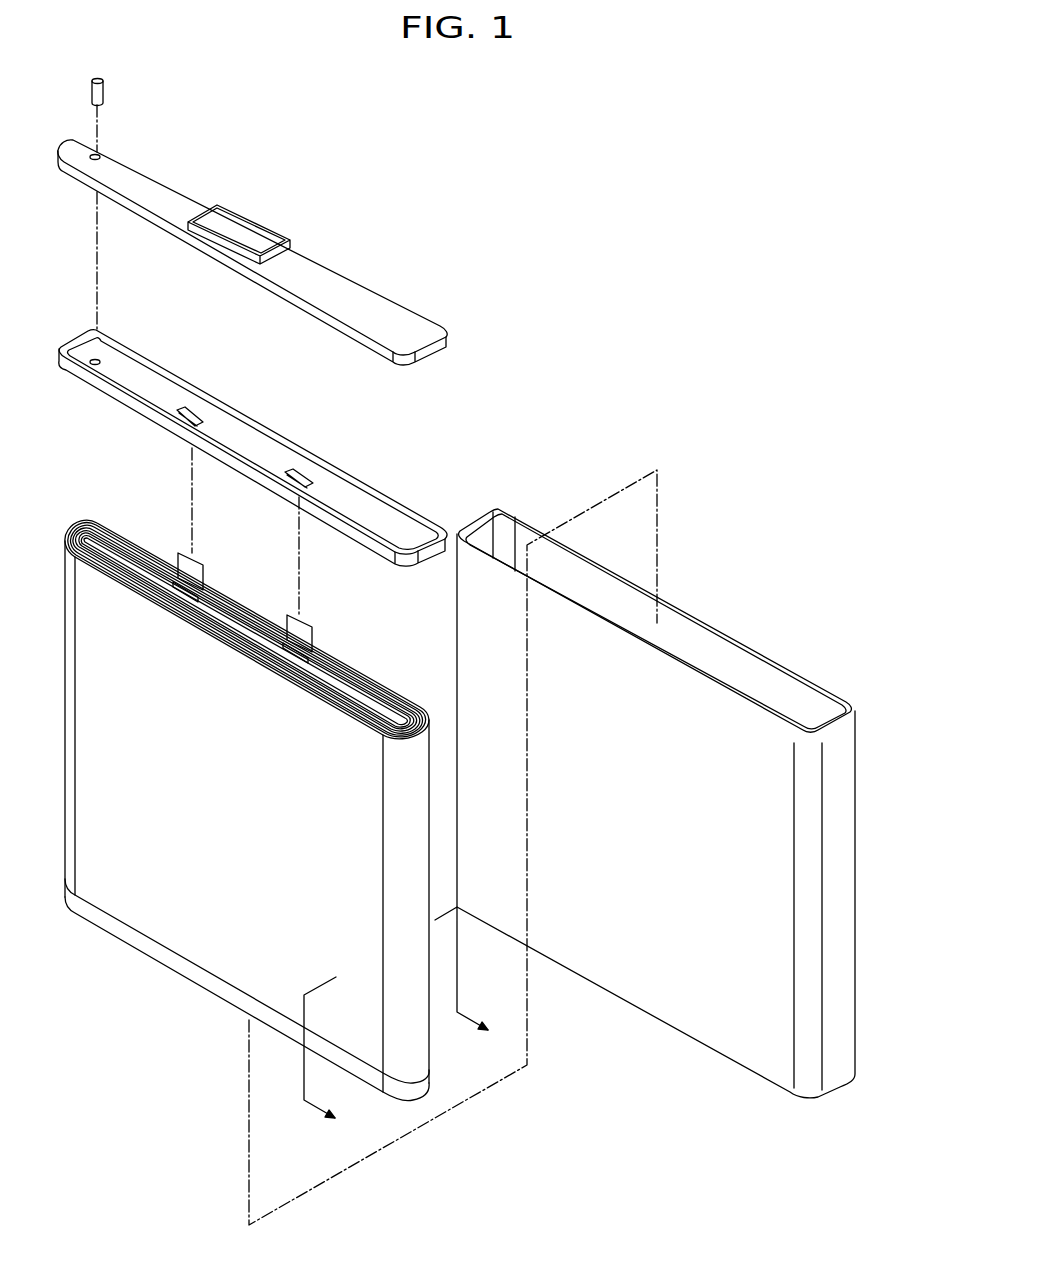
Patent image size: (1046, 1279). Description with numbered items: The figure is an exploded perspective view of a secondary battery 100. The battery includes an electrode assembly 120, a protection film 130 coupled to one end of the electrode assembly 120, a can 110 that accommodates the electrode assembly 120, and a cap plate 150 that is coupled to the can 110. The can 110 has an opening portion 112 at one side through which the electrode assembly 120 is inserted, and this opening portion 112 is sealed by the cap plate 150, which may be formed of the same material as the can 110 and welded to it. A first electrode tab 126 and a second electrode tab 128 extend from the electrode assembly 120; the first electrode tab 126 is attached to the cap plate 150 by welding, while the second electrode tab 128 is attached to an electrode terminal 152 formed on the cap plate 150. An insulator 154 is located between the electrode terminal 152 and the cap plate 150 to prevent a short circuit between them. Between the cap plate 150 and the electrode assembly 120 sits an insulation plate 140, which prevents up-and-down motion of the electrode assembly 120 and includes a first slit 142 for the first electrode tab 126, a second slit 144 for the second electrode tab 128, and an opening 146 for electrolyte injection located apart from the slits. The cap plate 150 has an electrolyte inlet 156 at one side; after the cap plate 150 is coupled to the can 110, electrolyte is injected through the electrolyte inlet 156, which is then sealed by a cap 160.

The secondary battery 100 is at (523, 223).
The can 110 is at (690, 1013).
The opening portion 112 is at (713, 662).
The electrode assembly 120 is at (147, 900).
The first electrode tab 126 is at (288, 617).
The second electrode tab 128 is at (180, 555).
The protection film 130 is at (172, 960).
The insulation plate 140 is at (392, 485).
The first slit 142 is at (302, 473).
The second slit 144 is at (193, 418).
The opening 146 is at (97, 359).
The cap plate 150 is at (417, 327).
The electrode terminal 152 is at (240, 225).
The insulator 154 is at (288, 240).
The electrolyte inlet 156 is at (98, 155).
The cap 160 is at (103, 92).